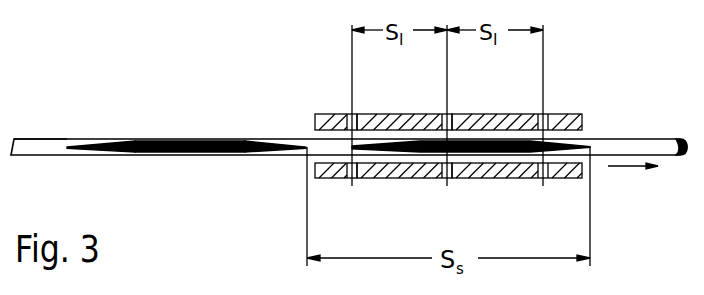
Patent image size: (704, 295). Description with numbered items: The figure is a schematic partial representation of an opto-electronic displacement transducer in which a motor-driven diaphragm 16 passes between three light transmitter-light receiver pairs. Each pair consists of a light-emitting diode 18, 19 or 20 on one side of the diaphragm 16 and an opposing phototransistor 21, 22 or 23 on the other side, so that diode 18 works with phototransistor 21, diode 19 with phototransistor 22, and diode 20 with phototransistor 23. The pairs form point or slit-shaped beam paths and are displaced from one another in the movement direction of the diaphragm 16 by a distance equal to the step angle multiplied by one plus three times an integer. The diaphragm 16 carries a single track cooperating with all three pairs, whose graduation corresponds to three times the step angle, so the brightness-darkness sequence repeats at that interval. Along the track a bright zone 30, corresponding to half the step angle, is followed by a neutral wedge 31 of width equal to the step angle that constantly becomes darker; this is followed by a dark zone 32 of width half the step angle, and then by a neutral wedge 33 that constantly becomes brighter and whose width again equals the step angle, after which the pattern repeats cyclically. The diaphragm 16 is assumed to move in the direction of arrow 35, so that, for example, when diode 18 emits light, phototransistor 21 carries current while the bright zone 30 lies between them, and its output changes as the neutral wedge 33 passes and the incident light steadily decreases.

The diaphragm 16 is at (620, 147).
The light-emitting diode 18 is at (352, 180).
The light-emitting diode 19 is at (447, 180).
The light-emitting diode 20 is at (543, 180).
The phototransistor 21 is at (350, 113).
The phototransistor 22 is at (446, 113).
The phototransistor 23 is at (542, 113).
The bright zone 30 is at (40, 150).
The neutral wedge 31 is at (97, 150).
The dark zone 32 is at (186, 148).
The neutral wedge 33 is at (262, 148).
The arrow 35 is at (608, 166).